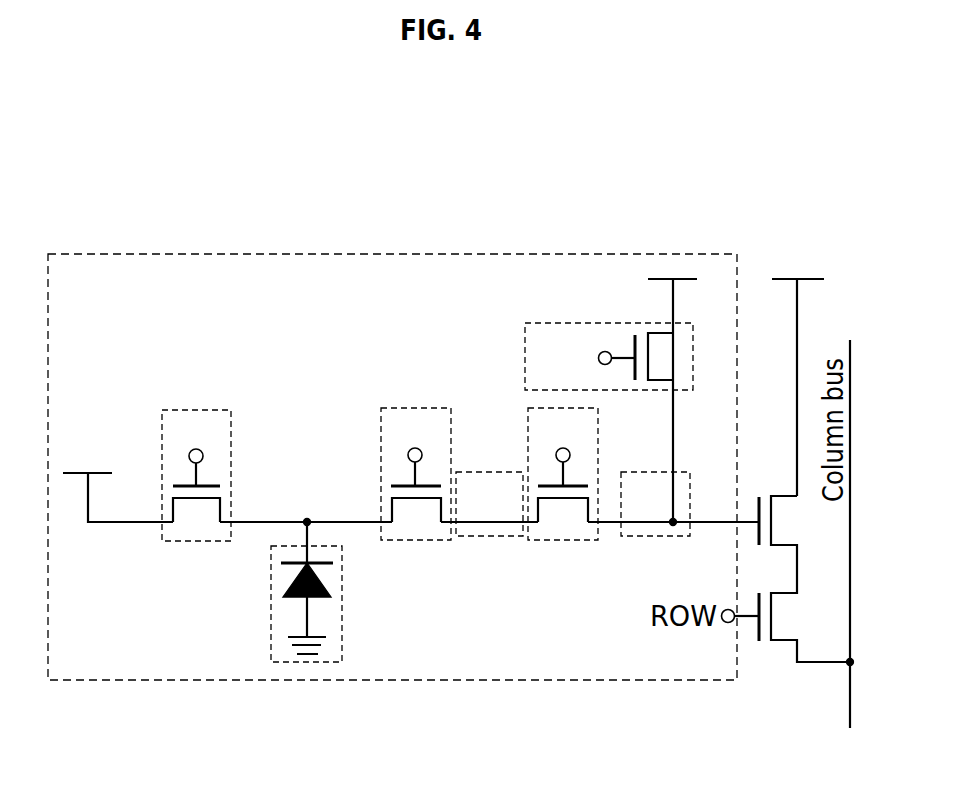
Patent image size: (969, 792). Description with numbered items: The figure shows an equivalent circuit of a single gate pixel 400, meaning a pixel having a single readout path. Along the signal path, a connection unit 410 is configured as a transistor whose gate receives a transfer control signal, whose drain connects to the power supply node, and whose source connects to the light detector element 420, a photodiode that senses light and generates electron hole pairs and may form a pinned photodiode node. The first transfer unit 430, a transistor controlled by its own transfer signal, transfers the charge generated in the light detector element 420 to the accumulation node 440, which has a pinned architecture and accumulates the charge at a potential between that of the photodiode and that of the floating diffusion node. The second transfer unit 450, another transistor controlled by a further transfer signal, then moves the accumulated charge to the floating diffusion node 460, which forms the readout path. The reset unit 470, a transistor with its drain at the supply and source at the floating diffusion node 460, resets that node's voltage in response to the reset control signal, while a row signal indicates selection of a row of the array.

The single gate pixel 400 is at (392, 254).
The connection unit 410 is at (194, 410).
The light detector element 420 is at (327, 546).
The first transfer unit 430 is at (413, 408).
The accumulation (ACC) node 440 is at (485, 472).
The second transfer unit 450 is at (565, 540).
The Floating Diffusion (FD) node 460 is at (655, 537).
The reset unit 470 is at (608, 323).